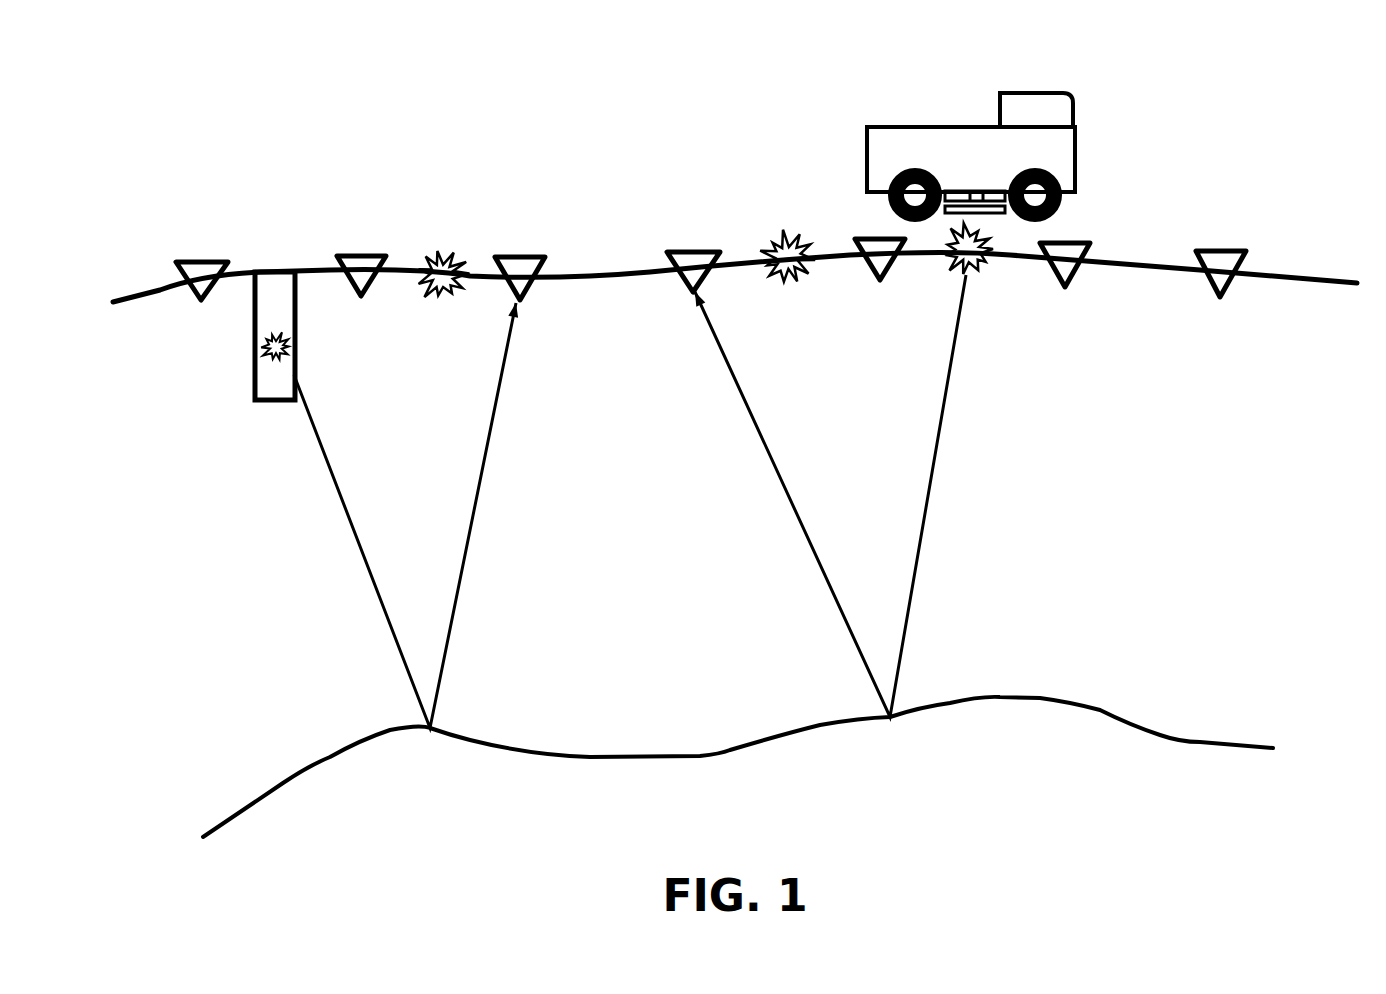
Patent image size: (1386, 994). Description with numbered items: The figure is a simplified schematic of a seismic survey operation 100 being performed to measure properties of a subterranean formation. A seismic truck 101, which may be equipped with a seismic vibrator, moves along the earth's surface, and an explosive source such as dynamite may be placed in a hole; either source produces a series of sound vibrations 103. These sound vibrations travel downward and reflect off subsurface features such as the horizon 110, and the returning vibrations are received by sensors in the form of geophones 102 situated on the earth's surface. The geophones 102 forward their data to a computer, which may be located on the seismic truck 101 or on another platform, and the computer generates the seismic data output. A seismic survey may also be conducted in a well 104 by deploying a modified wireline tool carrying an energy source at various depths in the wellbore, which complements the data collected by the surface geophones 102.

The seismic survey system 100 is at (310, 127).
The seismic truck 101 is at (1087, 158).
The geophones 102 is at (350, 252).
The sound vibrations 103 is at (757, 240).
The well 104 is at (273, 297).
The horizon 110 is at (277, 777).